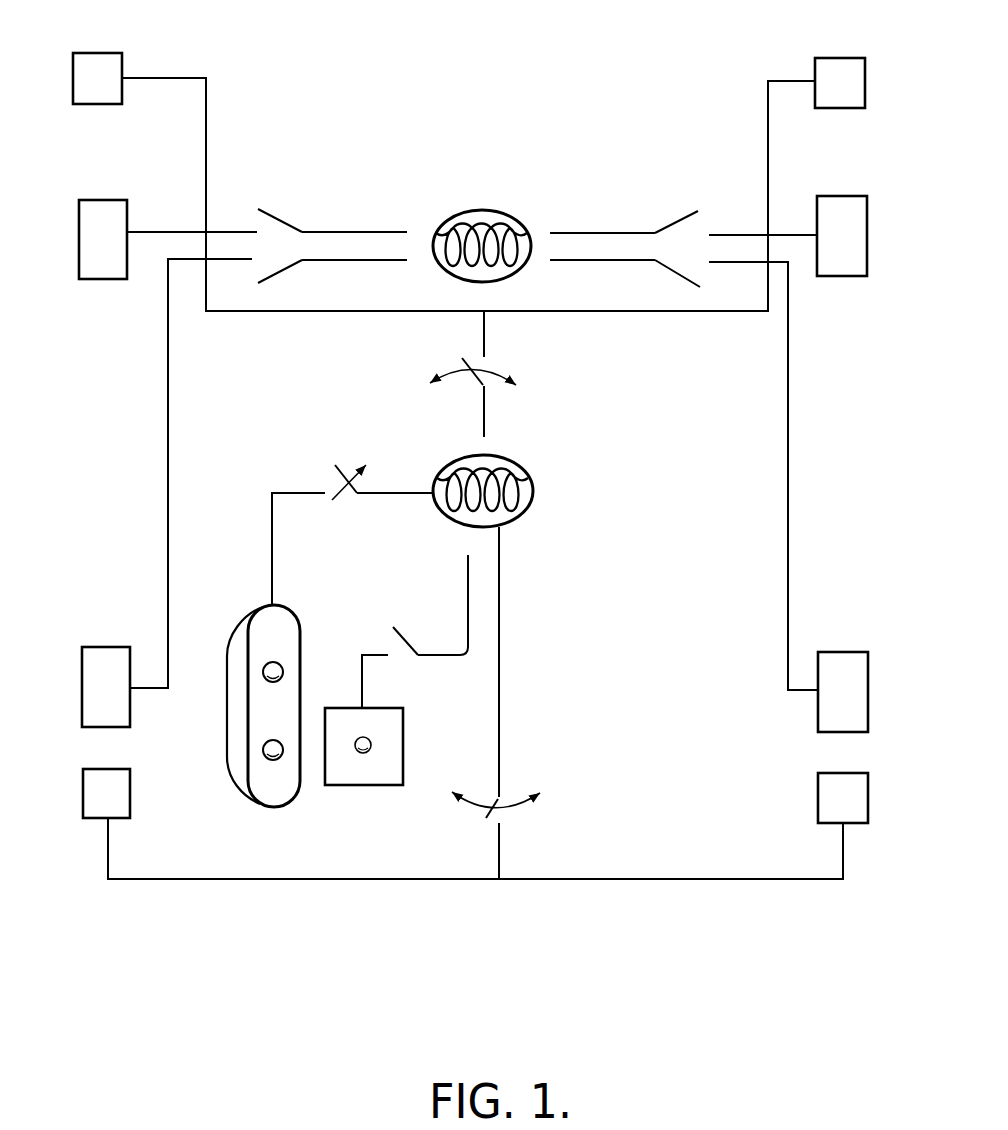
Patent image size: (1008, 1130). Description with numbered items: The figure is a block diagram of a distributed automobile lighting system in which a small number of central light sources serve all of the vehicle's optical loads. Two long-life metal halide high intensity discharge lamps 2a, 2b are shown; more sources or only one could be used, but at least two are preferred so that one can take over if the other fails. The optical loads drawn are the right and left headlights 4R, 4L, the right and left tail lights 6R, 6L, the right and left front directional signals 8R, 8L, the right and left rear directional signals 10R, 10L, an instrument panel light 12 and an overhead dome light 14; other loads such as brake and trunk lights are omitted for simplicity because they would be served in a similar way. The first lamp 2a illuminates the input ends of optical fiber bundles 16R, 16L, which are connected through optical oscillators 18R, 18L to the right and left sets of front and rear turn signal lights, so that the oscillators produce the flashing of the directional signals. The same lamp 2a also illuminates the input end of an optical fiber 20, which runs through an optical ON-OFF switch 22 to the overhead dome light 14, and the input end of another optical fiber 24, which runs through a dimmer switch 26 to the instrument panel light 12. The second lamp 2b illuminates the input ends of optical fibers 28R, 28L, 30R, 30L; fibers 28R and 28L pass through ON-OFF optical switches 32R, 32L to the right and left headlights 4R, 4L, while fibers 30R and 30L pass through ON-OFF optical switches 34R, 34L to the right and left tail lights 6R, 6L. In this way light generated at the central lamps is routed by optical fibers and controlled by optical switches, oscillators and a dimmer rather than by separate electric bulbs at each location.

The HID lamp 2a is at (532, 471).
The HID lamp 2b is at (491, 210).
The right headlight 4R is at (127, 212).
The left headlight 4L is at (95, 647).
The right tail light 6R is at (830, 196).
The left tail light 6L is at (857, 652).
The right front directional signal 8R is at (122, 57).
The left front directional signal 8L is at (130, 820).
The right rear directional signal 10R is at (815, 58).
The left rear directional signal 10L is at (818, 797).
The instrument panel light 12 is at (225, 720).
The overhead dome light 14 is at (368, 787).
The optical fiber bundle 16R is at (484, 403).
The optical fiber bundle 16L is at (499, 598).
The optical oscillator 18R is at (447, 352).
The optical oscillator 18L is at (480, 813).
The optical fiber 20 is at (468, 578).
The optical ON-OFF switch 22 is at (403, 660).
The optical fiber 24 is at (393, 498).
The dimmer switch 26 is at (328, 461).
The optical fiber 28R is at (368, 232).
The optical fiber 28L is at (375, 260).
The optical fiber 30R is at (588, 233).
The optical fiber 30L is at (612, 262).
The ON-OFF optical switch 32R is at (290, 210).
The ON-OFF optical switch 32L is at (297, 274).
The ON-OFF optical switch 34R is at (714, 229).
The ON-OFF optical switch 34L is at (703, 283).